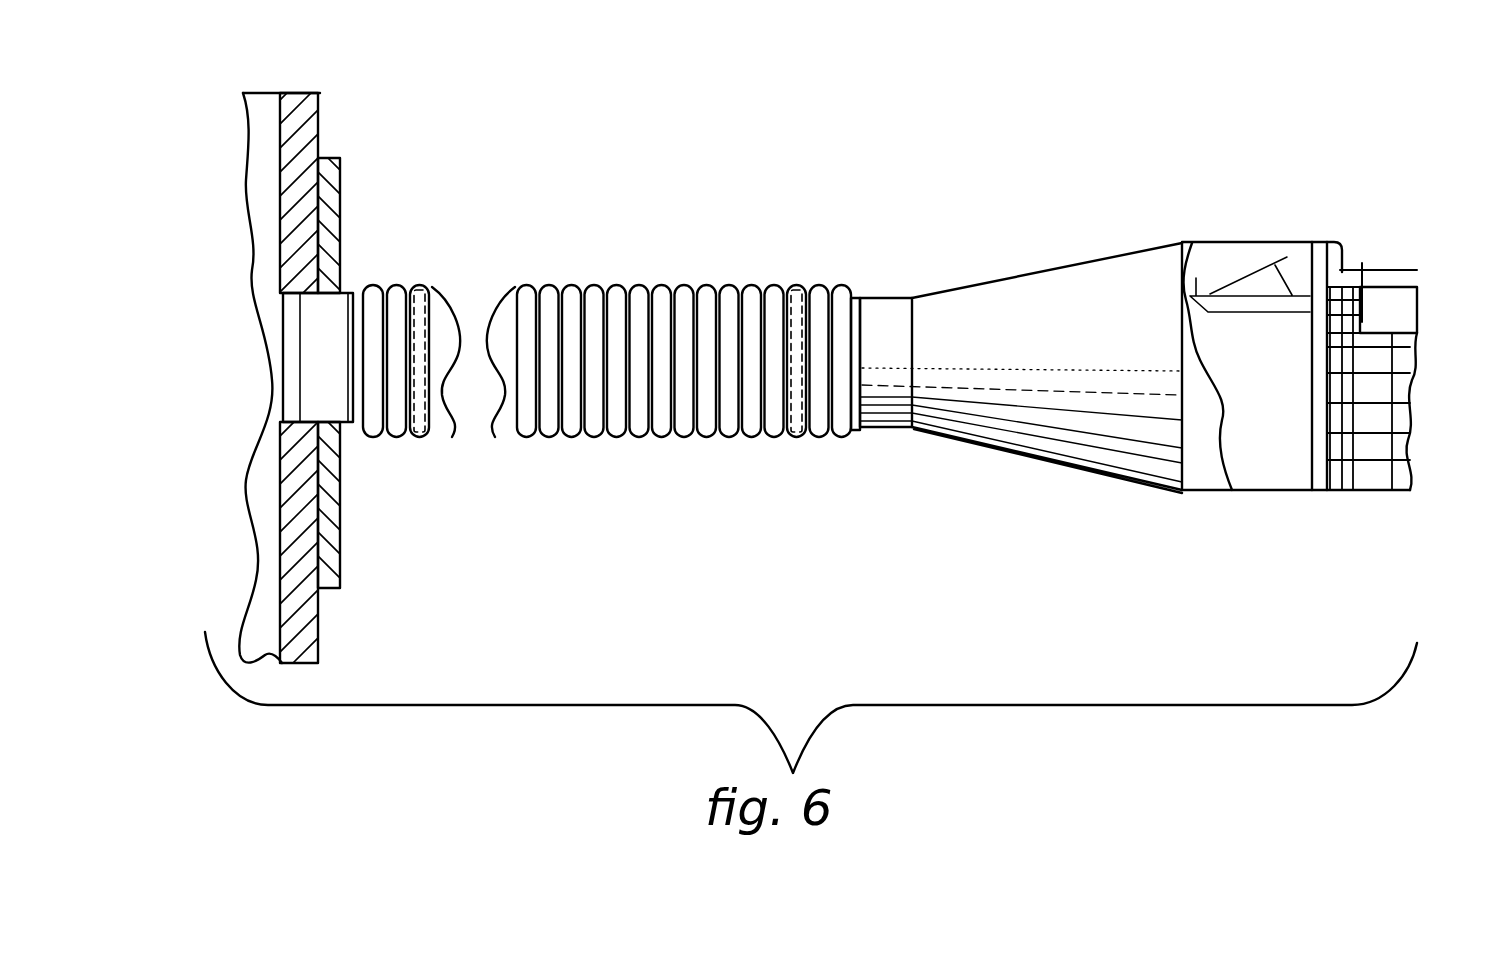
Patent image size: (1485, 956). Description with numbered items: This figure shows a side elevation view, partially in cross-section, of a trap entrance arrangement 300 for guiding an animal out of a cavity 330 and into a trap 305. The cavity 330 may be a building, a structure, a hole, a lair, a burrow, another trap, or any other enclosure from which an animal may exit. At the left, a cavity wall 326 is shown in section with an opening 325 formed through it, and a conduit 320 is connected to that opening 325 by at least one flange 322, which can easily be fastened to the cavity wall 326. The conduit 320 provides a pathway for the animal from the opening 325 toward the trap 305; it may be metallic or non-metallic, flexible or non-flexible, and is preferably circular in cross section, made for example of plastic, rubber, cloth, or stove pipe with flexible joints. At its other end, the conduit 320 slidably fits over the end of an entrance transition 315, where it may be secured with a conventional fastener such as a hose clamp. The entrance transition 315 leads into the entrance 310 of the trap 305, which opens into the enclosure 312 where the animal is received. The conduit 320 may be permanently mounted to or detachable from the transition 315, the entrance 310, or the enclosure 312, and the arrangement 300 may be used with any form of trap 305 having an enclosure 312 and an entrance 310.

The trap entrance arrangement 300 is at (925, 203).
The trap 305 is at (1405, 228).
The entrance 310 is at (1248, 198).
The enclosure 312 is at (1420, 358).
The entrance transition 315 is at (1040, 268).
The conduit 320 is at (595, 285).
The flange 322 is at (330, 205).
The opening 325 is at (292, 345).
The cavity wall 326 is at (312, 126).
The cavity 330 is at (260, 612).